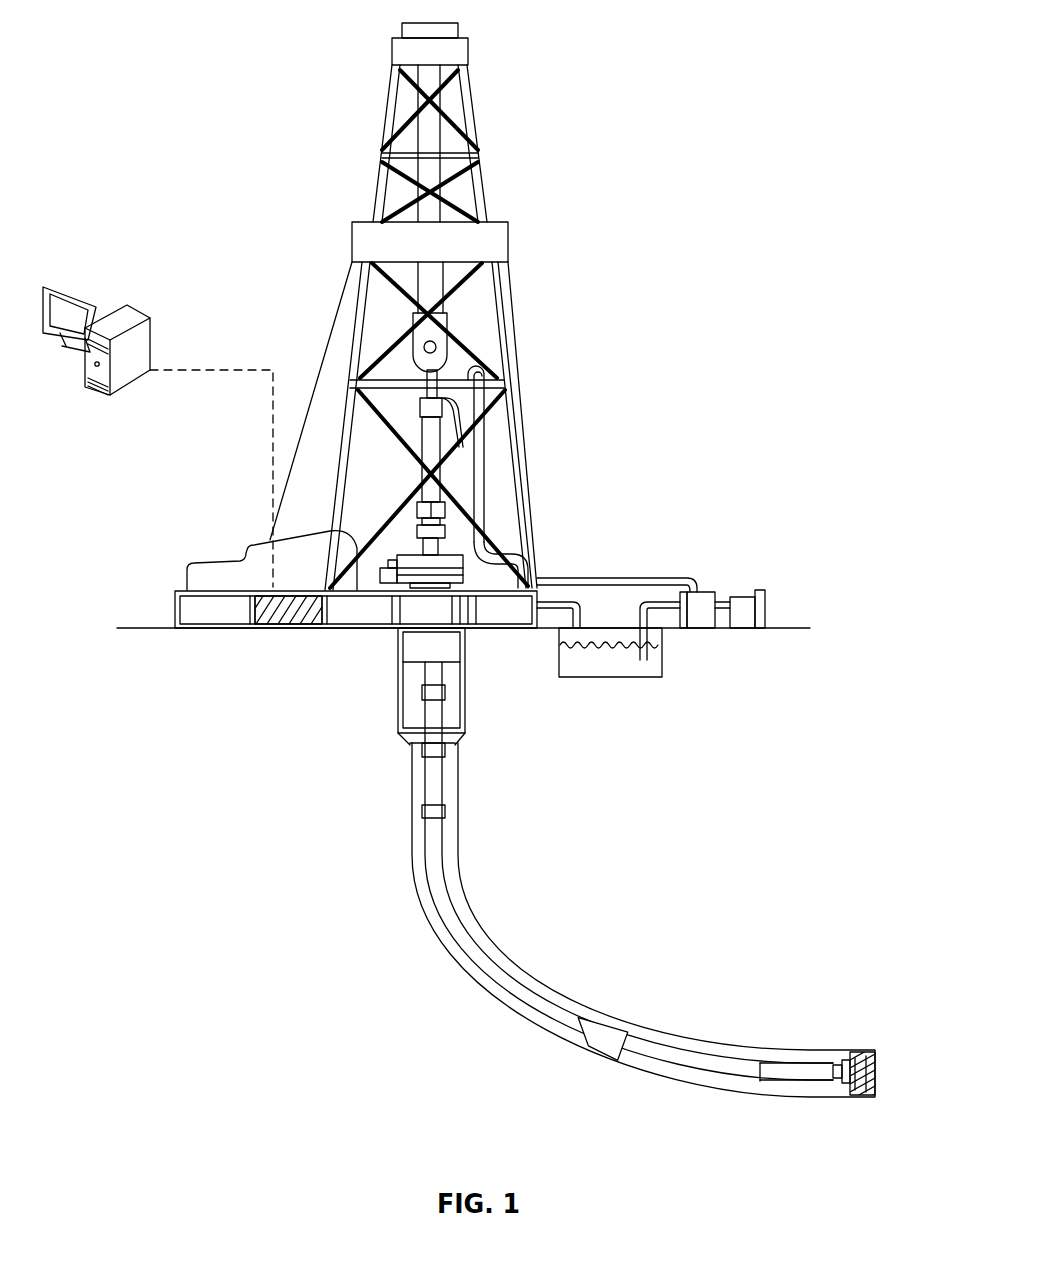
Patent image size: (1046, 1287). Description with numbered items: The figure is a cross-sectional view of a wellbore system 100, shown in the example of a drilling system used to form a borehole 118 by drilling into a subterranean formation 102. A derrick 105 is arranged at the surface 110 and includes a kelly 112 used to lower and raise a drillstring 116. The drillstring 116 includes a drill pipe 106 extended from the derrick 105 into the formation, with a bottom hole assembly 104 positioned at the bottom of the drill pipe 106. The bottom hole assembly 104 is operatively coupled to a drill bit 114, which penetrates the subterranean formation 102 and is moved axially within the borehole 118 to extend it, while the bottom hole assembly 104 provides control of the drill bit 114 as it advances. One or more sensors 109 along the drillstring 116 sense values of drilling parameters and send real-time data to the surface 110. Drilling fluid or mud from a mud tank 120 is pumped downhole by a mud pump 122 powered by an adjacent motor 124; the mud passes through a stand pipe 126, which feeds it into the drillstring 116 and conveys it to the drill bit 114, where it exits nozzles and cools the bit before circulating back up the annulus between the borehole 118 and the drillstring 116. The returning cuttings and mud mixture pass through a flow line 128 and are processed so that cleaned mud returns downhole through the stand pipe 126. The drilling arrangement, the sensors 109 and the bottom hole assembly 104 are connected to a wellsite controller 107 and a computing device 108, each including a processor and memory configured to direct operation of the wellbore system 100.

The wellbore system 100 is at (680, 168).
The subterranean formation 102 is at (238, 821).
The bottom hole assembly 104 is at (803, 1062).
The derrick 105 is at (358, 293).
The drill pipe 106 is at (450, 850).
The wellsite controller 107 is at (276, 628).
The computing device 108 is at (138, 310).
The sensors 109 is at (598, 1062).
The surface 110 is at (132, 627).
The kelly 112 is at (442, 350).
The drill bit 114 is at (878, 1070).
The drillstring 116 is at (728, 968).
The borehole 118 is at (410, 832).
The mud tank 120 is at (625, 668).
The mud pump 122 is at (703, 595).
The motor 124 is at (748, 615).
The stand pipe 126 is at (485, 457).
The flow line 128 is at (573, 602).